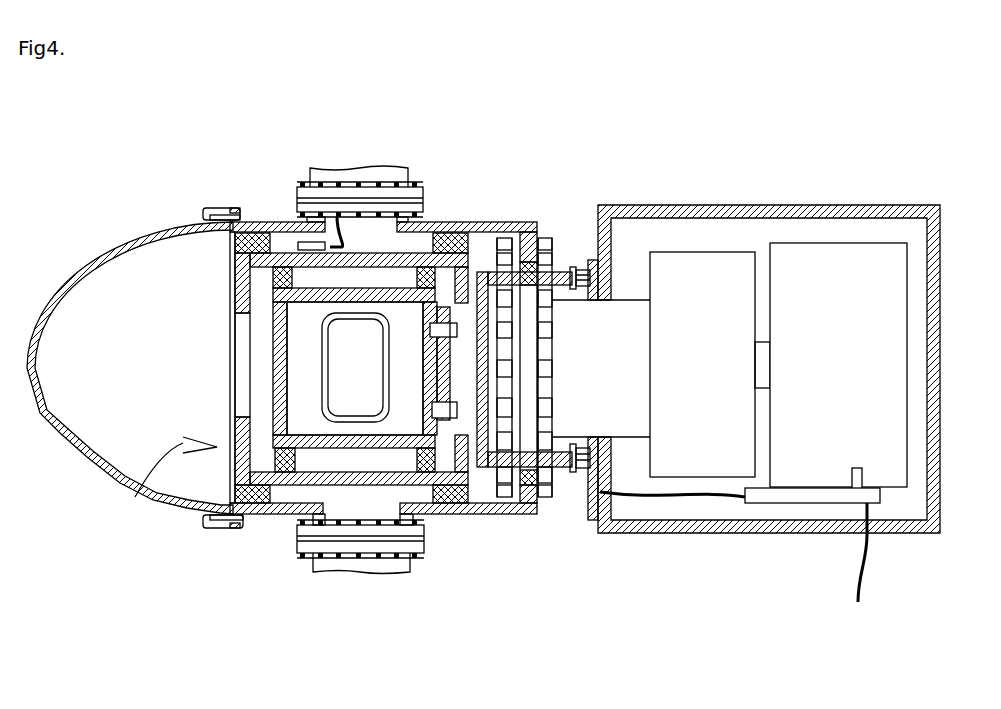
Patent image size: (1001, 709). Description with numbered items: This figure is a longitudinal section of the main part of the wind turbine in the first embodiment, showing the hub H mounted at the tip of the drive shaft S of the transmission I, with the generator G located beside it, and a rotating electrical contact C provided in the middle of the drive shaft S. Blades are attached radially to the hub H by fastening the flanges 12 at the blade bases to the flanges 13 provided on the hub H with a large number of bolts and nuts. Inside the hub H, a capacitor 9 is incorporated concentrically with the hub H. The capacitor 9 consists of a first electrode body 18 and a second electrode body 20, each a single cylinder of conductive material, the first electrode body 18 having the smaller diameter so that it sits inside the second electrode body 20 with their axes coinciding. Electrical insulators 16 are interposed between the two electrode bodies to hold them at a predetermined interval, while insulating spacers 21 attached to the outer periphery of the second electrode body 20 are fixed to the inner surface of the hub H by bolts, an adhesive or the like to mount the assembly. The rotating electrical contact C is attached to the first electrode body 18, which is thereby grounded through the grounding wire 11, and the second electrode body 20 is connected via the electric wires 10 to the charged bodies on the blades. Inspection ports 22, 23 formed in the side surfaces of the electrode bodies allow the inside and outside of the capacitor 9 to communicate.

The capacitor 9 is at (135, 497).
The electric wire 10 is at (338, 215).
The grounding wire 11 is at (850, 582).
The flange 12 is at (300, 188).
The flange 13 is at (300, 216).
The electrical insulator 16 is at (235, 283).
The first electrode body 18 is at (266, 445).
The second electrode body 20 is at (403, 250).
The spacer 21 is at (237, 245).
The inspection port 22 is at (360, 330).
The inspection port 23 is at (357, 420).
The drive shaft S is at (630, 320).
The transmission I is at (712, 280).
The generator G is at (858, 280).
The rotating electrical contact C is at (573, 475).
The hub H is at (505, 517).